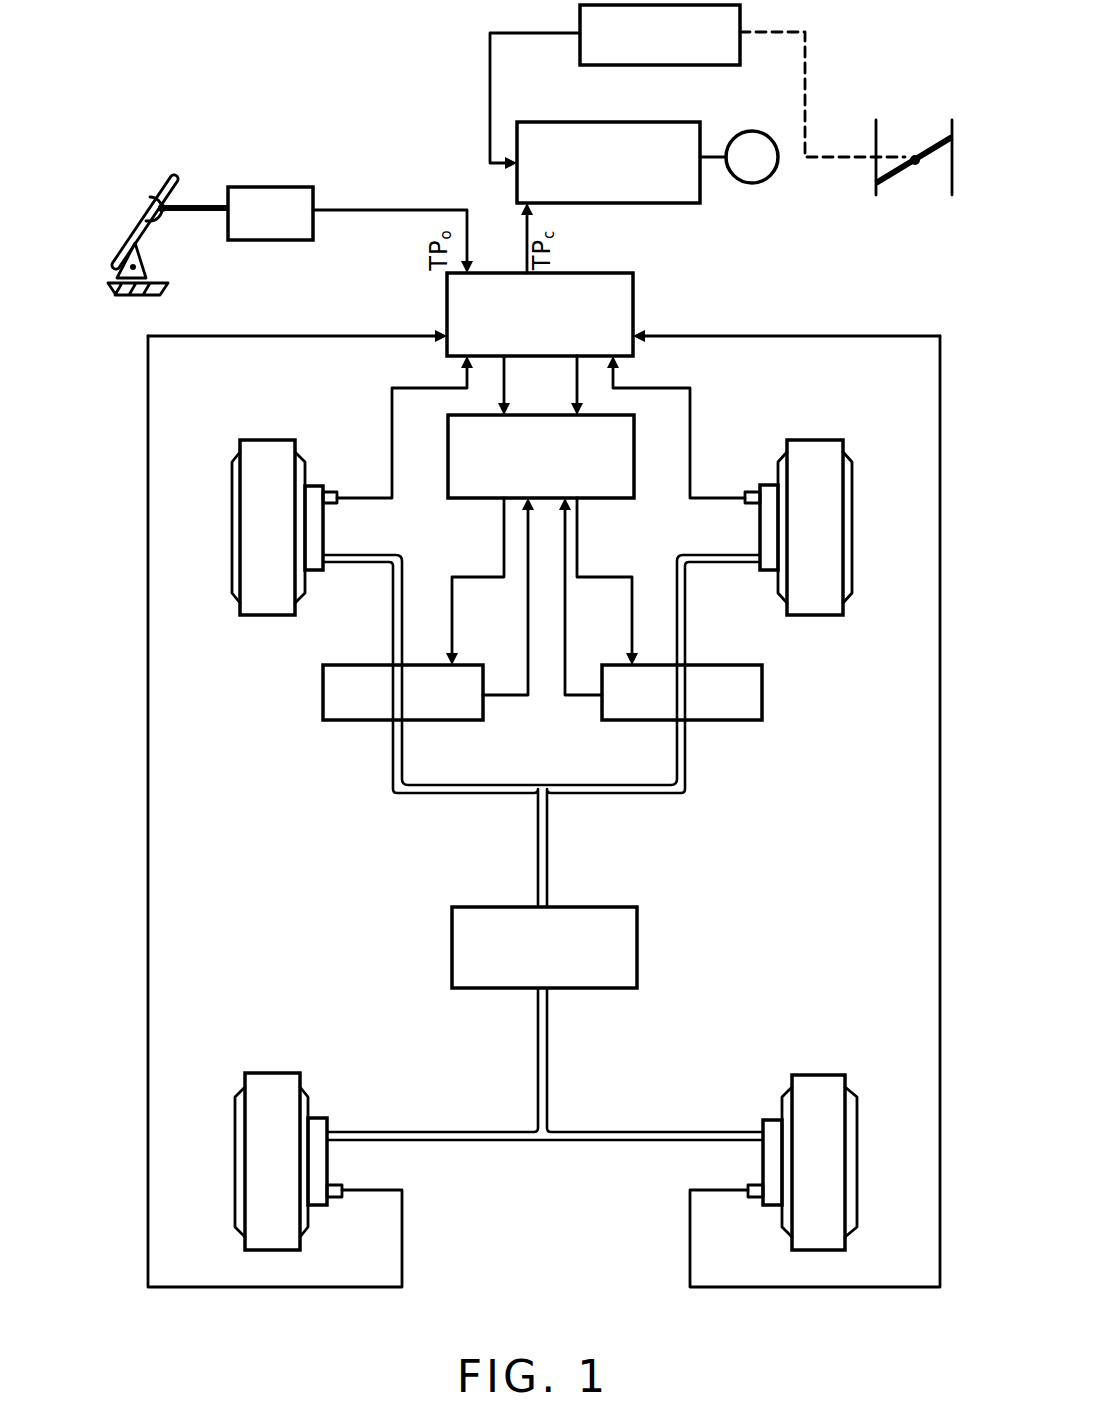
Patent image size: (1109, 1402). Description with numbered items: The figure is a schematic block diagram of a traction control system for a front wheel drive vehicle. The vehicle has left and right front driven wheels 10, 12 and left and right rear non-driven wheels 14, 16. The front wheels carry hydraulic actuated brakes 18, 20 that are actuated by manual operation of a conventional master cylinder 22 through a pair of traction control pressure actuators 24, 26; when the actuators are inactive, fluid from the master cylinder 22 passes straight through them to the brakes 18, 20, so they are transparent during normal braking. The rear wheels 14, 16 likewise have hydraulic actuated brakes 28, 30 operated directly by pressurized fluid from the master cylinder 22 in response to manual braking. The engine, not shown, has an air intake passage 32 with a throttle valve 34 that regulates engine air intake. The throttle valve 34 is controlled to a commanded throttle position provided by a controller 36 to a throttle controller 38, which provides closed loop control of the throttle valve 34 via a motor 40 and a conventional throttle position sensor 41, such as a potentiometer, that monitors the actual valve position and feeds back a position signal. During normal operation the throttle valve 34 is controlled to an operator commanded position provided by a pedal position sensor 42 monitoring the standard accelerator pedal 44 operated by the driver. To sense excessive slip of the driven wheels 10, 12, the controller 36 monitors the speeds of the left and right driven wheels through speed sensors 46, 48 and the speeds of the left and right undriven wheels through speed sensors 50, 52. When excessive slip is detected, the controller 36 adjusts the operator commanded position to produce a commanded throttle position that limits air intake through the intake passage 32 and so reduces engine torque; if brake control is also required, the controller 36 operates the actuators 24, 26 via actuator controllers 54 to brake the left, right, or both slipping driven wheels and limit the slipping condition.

The left front driven wheel 10 is at (262, 440).
The right front driven wheel 12 is at (815, 448).
The left rear non-driven wheel 14 is at (292, 1085).
The right rear non-driven wheel 16 is at (818, 1100).
The hydraulic actuated brake 18 is at (323, 545).
The hydraulic actuated brake 20 is at (762, 548).
The master cylinder 22 is at (597, 918).
The traction control pressure actuator 24 is at (322, 710).
The traction control pressure actuator 26 is at (763, 712).
The hydraulic actuated brake 28 is at (318, 1170).
The hydraulic actuated brake 30 is at (765, 1165).
The air intake passage 32 is at (877, 135).
The throttle valve 34 is at (935, 137).
The controller 36 is at (625, 296).
The throttle controller 38 is at (645, 128).
The motor 40 is at (758, 180).
The throttle position sensor 41 is at (585, 30).
The pedal position sensor 42 is at (303, 195).
The accelerator pedal 44 is at (160, 220).
The speed sensor 46 is at (333, 492).
The speed sensor 48 is at (748, 492).
The speed sensor 50 is at (332, 1196).
The speed sensor 52 is at (755, 1197).
The actuator controllers 54 is at (458, 455).